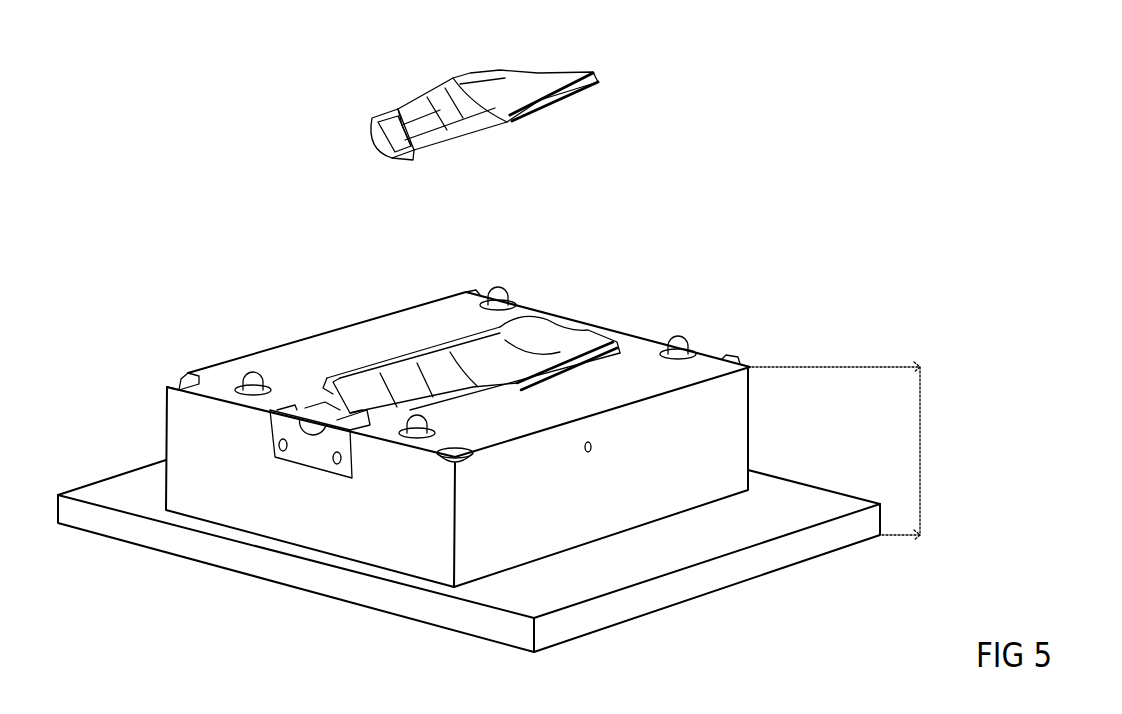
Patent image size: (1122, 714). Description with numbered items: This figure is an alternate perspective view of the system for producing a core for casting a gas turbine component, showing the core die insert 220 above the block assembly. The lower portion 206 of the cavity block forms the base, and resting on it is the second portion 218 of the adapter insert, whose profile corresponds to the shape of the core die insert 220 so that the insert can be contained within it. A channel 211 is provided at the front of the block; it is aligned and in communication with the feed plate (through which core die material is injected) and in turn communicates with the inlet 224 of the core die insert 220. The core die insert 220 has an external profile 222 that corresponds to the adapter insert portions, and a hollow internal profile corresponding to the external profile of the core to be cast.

The lower portion 206 is at (920, 450).
The second portion 218 is at (628, 336).
The channel 211 is at (320, 400).
The core die insert 220 is at (619, 92).
The external profile 222 is at (418, 96).
The inlet 224 is at (392, 134).